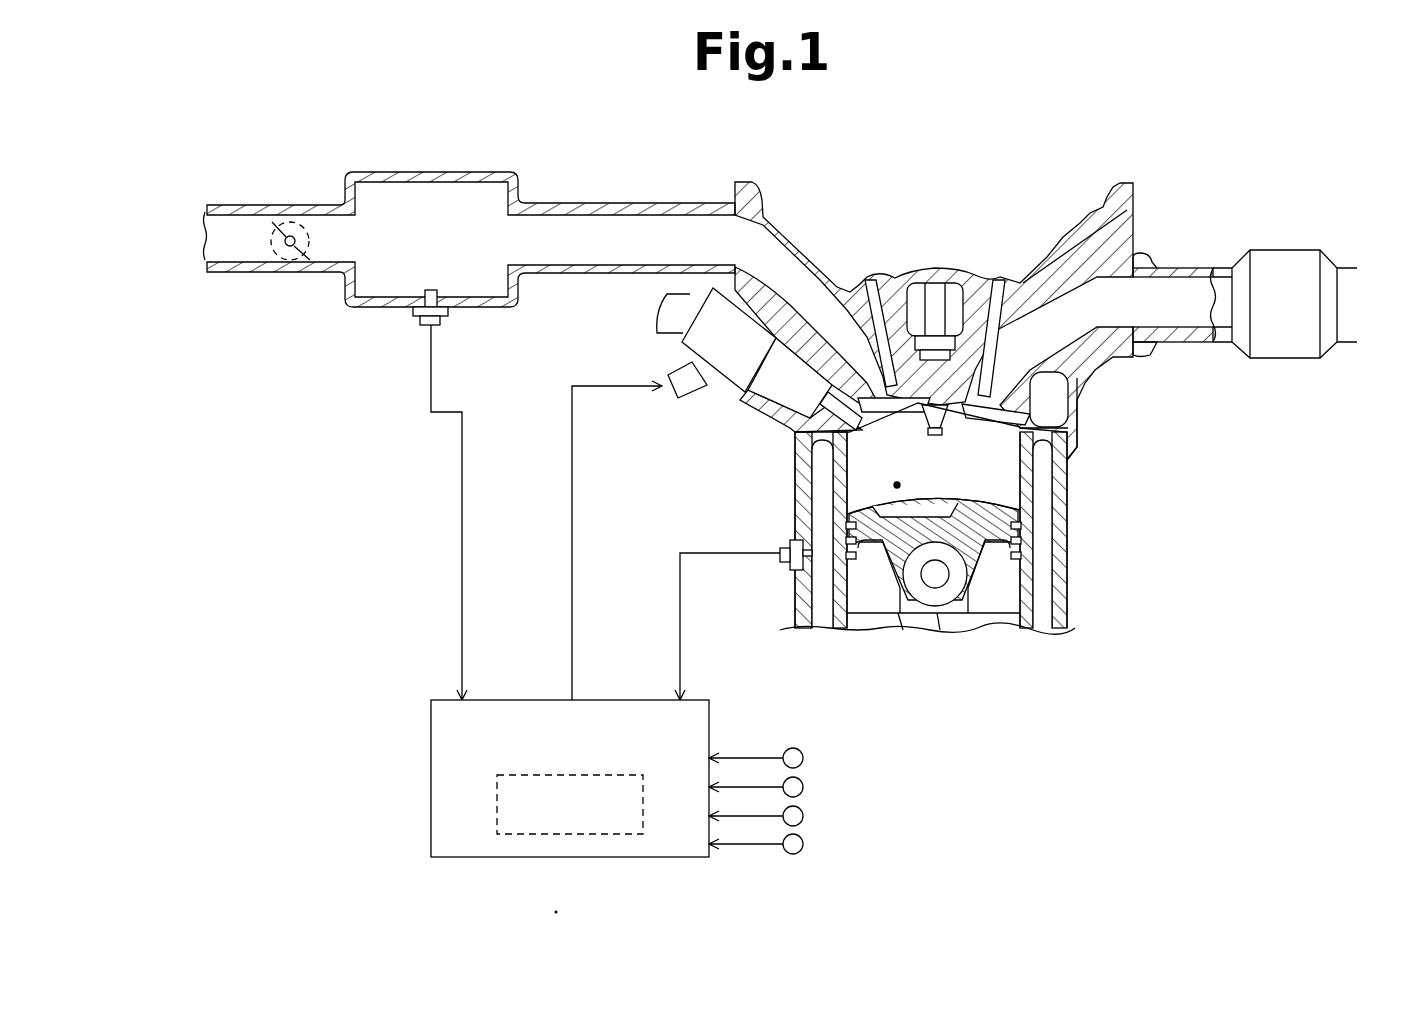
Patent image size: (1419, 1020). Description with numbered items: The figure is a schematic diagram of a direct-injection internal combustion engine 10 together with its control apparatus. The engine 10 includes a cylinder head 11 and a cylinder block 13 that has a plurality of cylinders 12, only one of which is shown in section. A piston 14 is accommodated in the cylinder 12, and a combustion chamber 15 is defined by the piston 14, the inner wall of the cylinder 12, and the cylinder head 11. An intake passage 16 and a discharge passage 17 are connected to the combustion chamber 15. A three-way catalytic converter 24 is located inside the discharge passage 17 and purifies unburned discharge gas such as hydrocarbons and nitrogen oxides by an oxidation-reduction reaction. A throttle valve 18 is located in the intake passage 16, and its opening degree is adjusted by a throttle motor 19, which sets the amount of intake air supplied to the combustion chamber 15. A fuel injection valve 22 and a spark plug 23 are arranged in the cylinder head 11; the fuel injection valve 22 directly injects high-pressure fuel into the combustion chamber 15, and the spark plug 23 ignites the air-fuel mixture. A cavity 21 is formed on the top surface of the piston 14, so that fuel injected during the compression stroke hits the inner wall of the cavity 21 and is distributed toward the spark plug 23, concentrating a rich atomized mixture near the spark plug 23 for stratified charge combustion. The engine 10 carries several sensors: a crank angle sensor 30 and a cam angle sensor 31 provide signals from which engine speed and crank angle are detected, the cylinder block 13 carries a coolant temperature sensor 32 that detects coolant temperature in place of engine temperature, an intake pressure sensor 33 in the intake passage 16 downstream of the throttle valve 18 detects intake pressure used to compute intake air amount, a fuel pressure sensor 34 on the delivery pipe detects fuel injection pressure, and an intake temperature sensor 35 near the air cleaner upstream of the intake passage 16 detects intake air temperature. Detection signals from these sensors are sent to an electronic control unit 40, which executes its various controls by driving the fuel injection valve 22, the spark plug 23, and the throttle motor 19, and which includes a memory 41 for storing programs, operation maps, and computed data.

The internal combustion engine 10 is at (1134, 458).
The cylinder head 11 is at (1094, 364).
The cylinder 12 is at (1010, 626).
The cylinder block 13 is at (1068, 523).
The piston 14 is at (988, 596).
The combustion chamber 15 is at (895, 485).
The intake passage 16 is at (672, 228).
The discharge passage 17 is at (1190, 280).
The throttle valve 18 is at (289, 234).
The throttle motor 19 is at (318, 228).
The cavity 21 is at (918, 517).
The fuel injection valve 22 is at (732, 367).
The spark plug 23 is at (944, 430).
The three-way catalytic converter 24 is at (1288, 358).
The crank angle sensor 30 is at (803, 758).
The cam angle sensor 31 is at (803, 787).
The coolant temperature sensor 32 is at (783, 566).
The intake pressure sensor 33 is at (408, 312).
The fuel pressure sensor 34 is at (803, 816).
The intake temperature sensor 35 is at (803, 844).
The electronic control unit 40 is at (663, 858).
The memory 41 is at (565, 775).